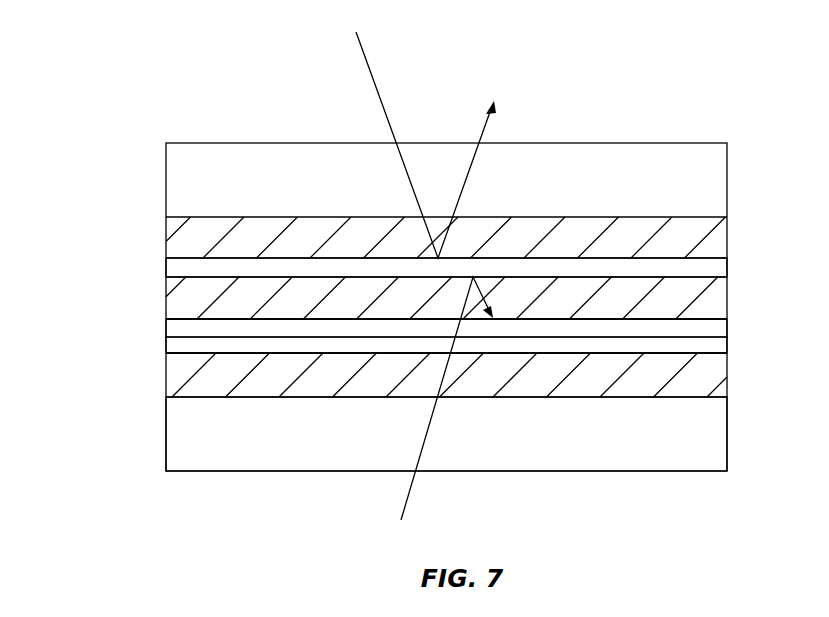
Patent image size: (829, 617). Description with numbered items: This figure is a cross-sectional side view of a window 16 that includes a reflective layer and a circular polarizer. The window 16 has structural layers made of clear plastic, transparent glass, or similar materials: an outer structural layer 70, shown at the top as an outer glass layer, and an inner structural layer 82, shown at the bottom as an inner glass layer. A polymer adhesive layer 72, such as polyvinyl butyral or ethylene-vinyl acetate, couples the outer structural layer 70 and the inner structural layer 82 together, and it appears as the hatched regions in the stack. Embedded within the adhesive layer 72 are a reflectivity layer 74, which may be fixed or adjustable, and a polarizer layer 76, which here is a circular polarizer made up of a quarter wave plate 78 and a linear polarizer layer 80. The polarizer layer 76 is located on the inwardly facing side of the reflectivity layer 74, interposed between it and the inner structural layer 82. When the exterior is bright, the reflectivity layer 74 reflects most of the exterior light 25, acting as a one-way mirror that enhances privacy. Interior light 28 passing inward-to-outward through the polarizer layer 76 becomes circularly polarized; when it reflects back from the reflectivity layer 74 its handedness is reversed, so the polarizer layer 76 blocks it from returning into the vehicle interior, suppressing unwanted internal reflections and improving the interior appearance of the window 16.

The window 16 is at (108, 142).
The exterior light 25 is at (377, 83).
The interior light 28 is at (410, 495).
The outer structural layer 70 is at (727, 168).
The polymer adhesive layer 72 is at (727, 234).
The reflectivity layer 74 is at (727, 266).
The polarizer layer 76 is at (155, 318).
The quarter wave plate 78 is at (727, 326).
The linear polarizer layer 80 is at (727, 346).
The inner structural layer 82 is at (727, 428).